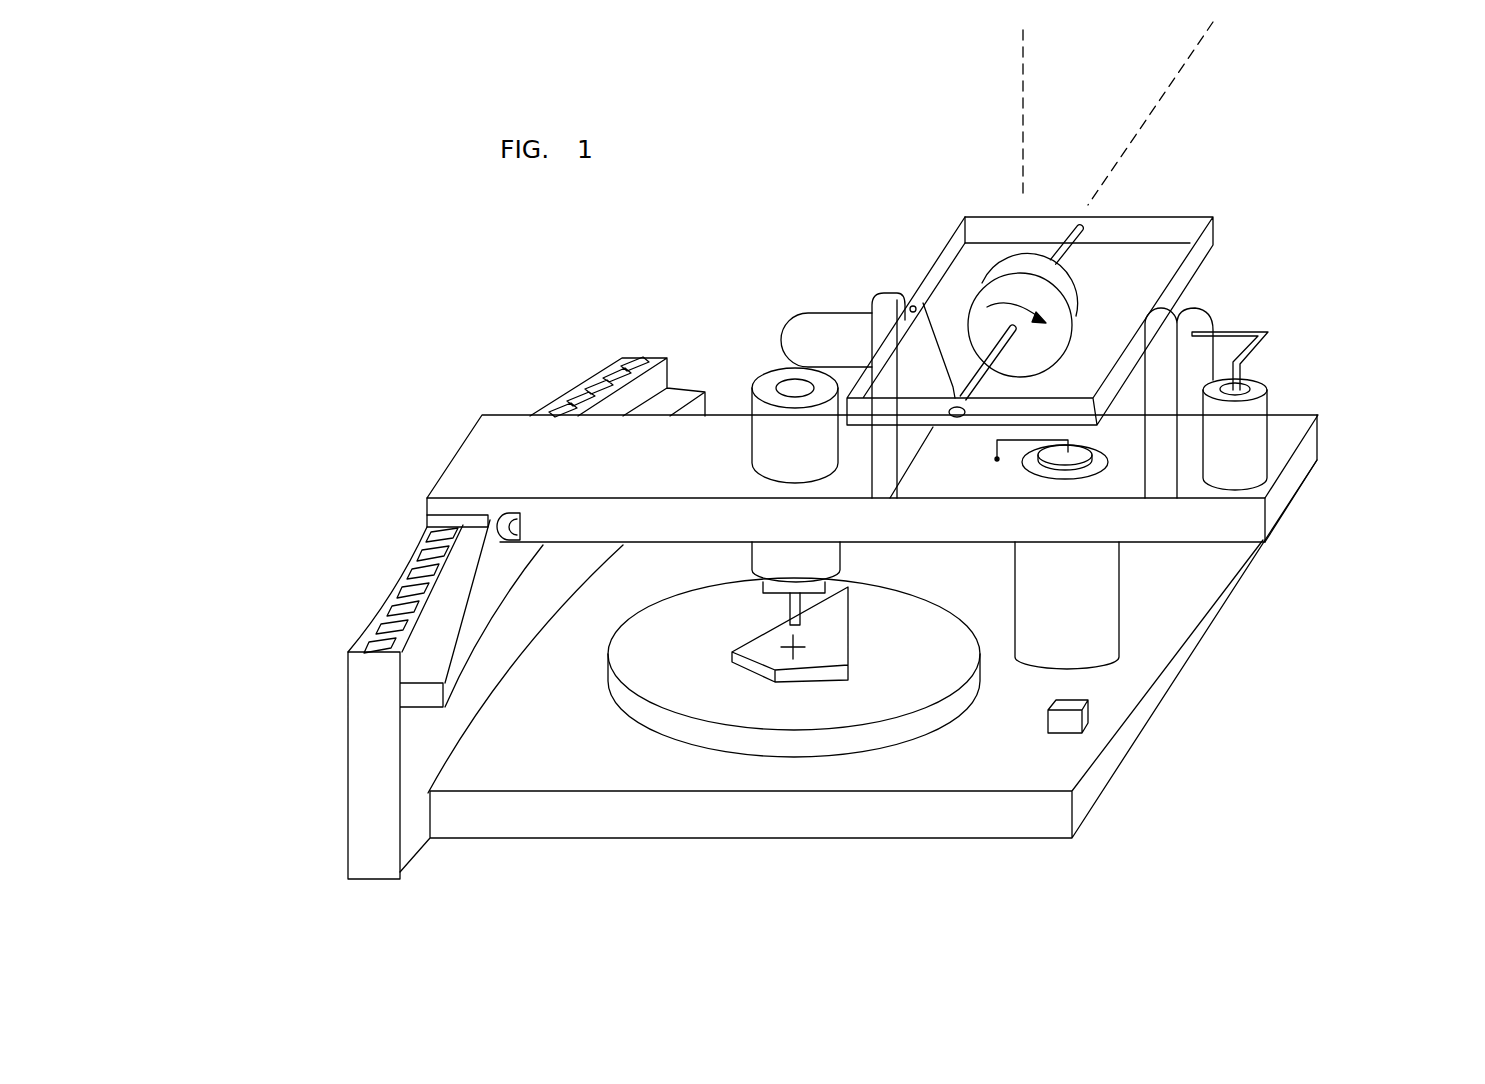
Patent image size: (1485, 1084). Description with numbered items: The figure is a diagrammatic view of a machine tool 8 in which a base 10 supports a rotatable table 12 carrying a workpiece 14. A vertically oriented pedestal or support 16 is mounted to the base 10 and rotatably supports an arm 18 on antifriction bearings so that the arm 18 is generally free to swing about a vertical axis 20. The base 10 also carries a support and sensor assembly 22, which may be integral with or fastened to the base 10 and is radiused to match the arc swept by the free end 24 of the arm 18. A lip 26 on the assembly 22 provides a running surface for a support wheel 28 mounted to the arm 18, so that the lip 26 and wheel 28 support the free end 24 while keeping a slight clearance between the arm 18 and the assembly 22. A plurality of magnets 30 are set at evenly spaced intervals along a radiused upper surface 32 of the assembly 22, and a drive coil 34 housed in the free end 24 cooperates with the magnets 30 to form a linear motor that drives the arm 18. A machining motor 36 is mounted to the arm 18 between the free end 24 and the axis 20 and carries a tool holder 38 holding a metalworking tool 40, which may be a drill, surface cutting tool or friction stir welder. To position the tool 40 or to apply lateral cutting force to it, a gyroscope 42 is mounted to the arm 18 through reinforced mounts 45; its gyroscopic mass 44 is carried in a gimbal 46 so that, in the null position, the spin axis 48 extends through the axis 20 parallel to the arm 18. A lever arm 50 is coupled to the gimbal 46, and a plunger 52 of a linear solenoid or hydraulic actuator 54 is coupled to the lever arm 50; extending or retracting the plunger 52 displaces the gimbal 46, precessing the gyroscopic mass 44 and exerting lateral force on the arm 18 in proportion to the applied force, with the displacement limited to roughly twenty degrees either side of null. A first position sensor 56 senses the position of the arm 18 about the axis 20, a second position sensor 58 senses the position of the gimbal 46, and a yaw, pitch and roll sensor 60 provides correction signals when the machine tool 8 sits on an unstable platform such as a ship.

The machine tool 8 is at (1272, 731).
The base 10 is at (1100, 792).
The rotatable table 12 is at (937, 712).
The workpiece 14 is at (758, 668).
The pedestal or support 16 is at (1118, 573).
The arm 18 is at (641, 462).
The axis 20 is at (1020, 82).
The support and sensor assembly 22 is at (347, 723).
The free end 24 is at (468, 435).
The lip 26 is at (450, 627).
The support wheel 28 is at (507, 513).
The magnets 30 is at (390, 598).
The radiused upper surface 32 is at (360, 643).
The drive coil 34 is at (430, 522).
The motor 36 is at (767, 370).
The tool holder 38 is at (760, 580).
The metalworking tool 40 is at (802, 613).
The gyroscope 42 is at (961, 190).
The gyroscopic mass 44 is at (1020, 252).
The mounts 45 is at (1205, 306).
The gimbal 46 is at (1197, 215).
The spin axis 48 is at (1177, 75).
The lever arm 50 is at (1257, 350).
The plunger 52 is at (1245, 372).
The linear solenoid or hydraulic actuator 54 is at (1270, 423).
The first position sensor 56 is at (1080, 463).
The second position sensor 58 is at (827, 313).
The yaw, pitch and roll sensor 60 is at (1088, 708).